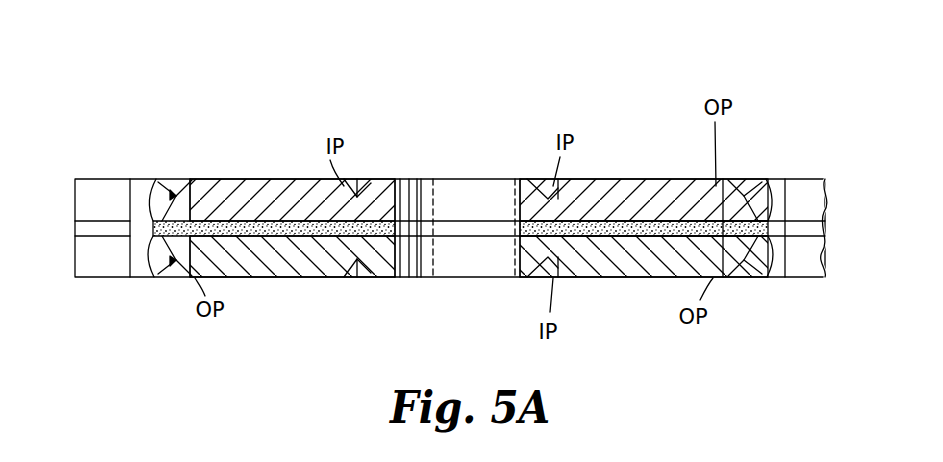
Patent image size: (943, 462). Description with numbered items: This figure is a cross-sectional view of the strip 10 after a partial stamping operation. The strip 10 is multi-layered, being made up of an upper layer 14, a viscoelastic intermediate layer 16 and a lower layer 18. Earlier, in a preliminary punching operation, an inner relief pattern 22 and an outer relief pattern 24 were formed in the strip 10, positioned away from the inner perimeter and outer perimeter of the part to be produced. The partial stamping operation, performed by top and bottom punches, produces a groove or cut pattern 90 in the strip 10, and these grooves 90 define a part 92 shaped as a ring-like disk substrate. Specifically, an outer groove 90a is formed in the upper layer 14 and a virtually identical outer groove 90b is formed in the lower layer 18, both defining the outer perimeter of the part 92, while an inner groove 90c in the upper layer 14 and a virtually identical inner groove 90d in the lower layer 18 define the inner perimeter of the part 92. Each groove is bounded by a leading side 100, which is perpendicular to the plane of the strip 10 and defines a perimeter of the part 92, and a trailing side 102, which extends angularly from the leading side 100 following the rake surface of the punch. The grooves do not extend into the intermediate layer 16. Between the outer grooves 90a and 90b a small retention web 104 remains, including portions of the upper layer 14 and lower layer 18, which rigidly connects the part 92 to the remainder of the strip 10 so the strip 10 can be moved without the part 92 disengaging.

The strip 10 is at (783, 108).
The upper layer 14 is at (815, 208).
The intermediate layer 16 is at (820, 232).
The lower layer 18 is at (822, 283).
The inner relief pattern 22 is at (526, 186).
The outer relief pattern 24 is at (130, 205).
The groove 90 is at (572, 272).
The outer groove 90a is at (178, 186).
The outer groove 90b is at (172, 278).
The inner groove 90c is at (368, 186).
The inner groove 90d is at (365, 278).
The part 92 is at (282, 272).
The leading side 100 is at (190, 186).
The trailing side 102 is at (157, 186).
The retention web 104 is at (697, 186).